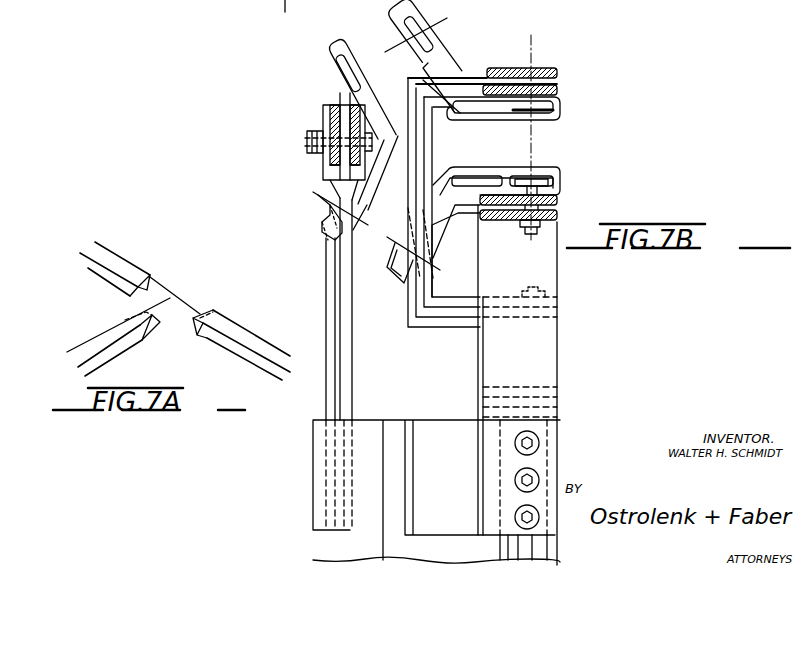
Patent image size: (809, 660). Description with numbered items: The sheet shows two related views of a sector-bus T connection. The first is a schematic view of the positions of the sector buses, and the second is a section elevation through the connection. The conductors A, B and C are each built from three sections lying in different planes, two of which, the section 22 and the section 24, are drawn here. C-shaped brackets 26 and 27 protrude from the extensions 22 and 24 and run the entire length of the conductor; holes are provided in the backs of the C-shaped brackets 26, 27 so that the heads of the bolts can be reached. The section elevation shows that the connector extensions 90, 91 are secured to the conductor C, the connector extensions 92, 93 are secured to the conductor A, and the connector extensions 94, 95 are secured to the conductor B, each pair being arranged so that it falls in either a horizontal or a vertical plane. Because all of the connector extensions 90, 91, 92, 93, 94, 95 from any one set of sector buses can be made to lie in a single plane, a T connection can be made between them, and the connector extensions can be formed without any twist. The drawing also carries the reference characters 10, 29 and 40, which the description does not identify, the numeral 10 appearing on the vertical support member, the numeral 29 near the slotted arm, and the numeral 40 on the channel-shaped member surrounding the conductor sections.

In FIG. 7B, the support post 10 is at (337, 95).
In FIG. 7B, the section 22 is at (423, 63).
In FIG. 7B, the section 24 is at (497, 118).
In FIG. 7B, the C-shaped bracket 26 is at (405, 12).
In FIG. 7B, the C-shaped bracket 27 is at (333, 43).
In FIG. 7B, the slot 29 is at (370, 82).
In FIG. 7B, the channel member 40 is at (453, 57).
In FIG. 7B, the connector extension 90 is at (552, 65).
In FIG. 7B, the connector extension 91 is at (560, 92).
In FIG. 7B, the connector extension 92 is at (557, 198).
In FIG. 7B, the connector extension 93 is at (557, 213).
In FIG. 7B, the connector extension 94 is at (338, 117).
In FIG. 7B, the connector extension 95 is at (350, 165).
In FIG. 7A, the conductor A is at (118, 281).
In FIG. 7B, the conductor A is at (460, 167).
In FIG. 7A, the conductor B is at (131, 270).
In FIG. 7B, the conductor B is at (400, 124).
In FIG. 7A, the conductor C is at (150, 277).
In FIG. 7B, the conductor C is at (457, 120).